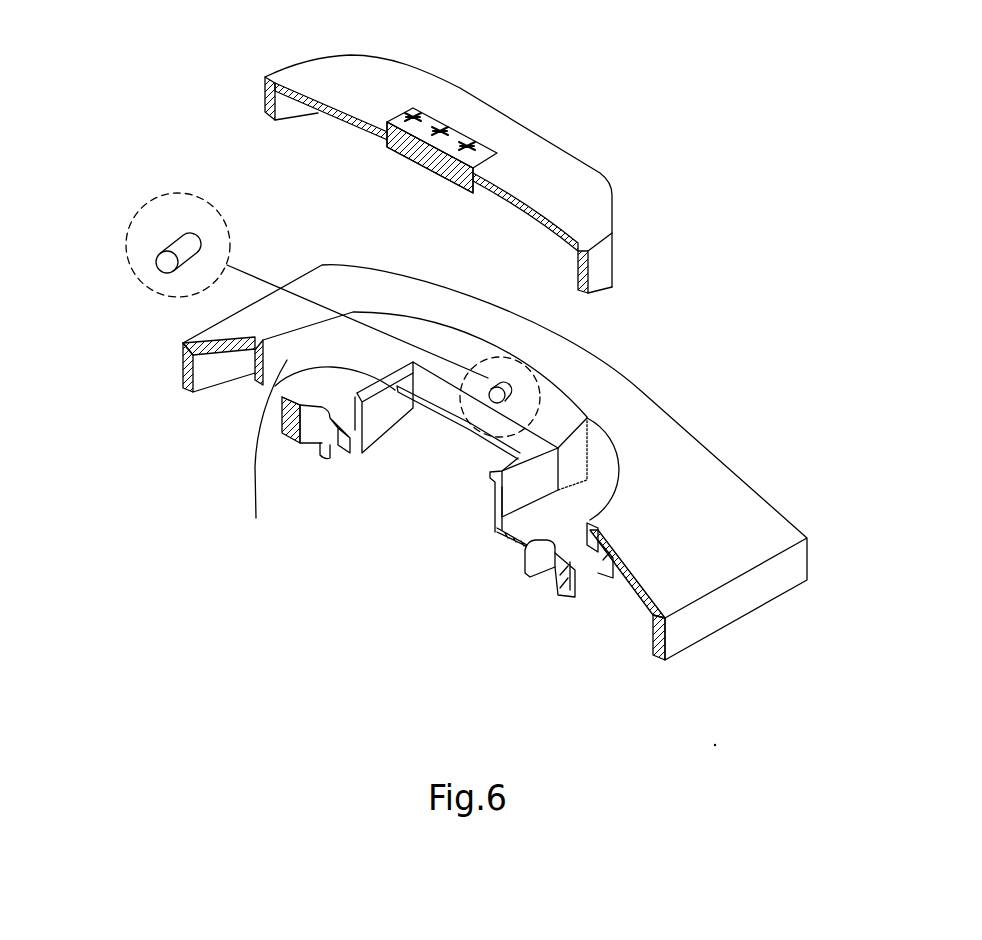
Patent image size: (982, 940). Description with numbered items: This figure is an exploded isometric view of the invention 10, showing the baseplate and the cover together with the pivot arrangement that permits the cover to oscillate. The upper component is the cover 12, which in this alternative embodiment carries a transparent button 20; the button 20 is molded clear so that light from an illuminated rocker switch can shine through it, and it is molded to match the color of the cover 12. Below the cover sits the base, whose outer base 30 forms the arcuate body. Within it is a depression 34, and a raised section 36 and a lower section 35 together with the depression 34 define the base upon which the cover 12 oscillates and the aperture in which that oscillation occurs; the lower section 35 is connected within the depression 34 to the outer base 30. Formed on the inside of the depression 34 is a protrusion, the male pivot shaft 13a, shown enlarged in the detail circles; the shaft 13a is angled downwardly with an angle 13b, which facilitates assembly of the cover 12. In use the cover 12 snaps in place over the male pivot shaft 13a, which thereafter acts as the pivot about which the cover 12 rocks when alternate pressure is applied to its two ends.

The heating element assembly 10 is at (682, 80).
The cover 12 is at (598, 187).
The male pivot shaft 13a is at (217, 210).
The angle 13b is at (160, 255).
The transparent button 20 is at (443, 123).
The outer base 30 is at (681, 446).
The depression 34 is at (256, 518).
The lower section 35 is at (497, 527).
The raised section 36 is at (455, 428).